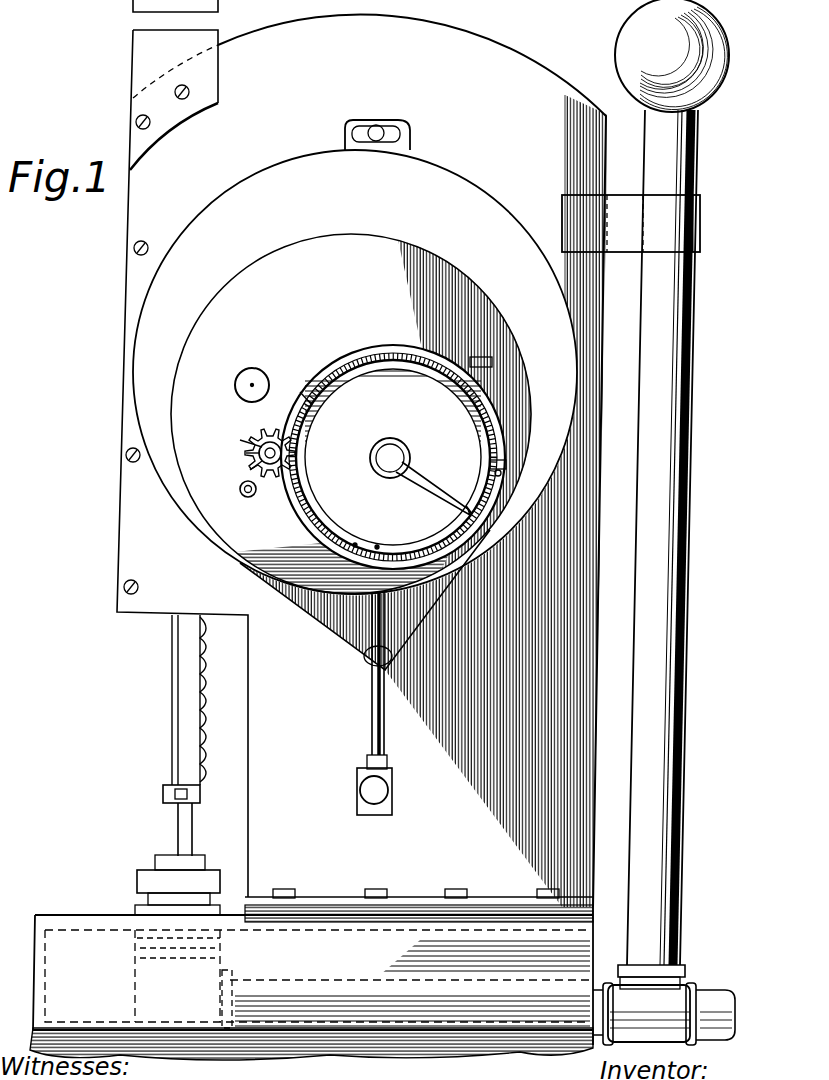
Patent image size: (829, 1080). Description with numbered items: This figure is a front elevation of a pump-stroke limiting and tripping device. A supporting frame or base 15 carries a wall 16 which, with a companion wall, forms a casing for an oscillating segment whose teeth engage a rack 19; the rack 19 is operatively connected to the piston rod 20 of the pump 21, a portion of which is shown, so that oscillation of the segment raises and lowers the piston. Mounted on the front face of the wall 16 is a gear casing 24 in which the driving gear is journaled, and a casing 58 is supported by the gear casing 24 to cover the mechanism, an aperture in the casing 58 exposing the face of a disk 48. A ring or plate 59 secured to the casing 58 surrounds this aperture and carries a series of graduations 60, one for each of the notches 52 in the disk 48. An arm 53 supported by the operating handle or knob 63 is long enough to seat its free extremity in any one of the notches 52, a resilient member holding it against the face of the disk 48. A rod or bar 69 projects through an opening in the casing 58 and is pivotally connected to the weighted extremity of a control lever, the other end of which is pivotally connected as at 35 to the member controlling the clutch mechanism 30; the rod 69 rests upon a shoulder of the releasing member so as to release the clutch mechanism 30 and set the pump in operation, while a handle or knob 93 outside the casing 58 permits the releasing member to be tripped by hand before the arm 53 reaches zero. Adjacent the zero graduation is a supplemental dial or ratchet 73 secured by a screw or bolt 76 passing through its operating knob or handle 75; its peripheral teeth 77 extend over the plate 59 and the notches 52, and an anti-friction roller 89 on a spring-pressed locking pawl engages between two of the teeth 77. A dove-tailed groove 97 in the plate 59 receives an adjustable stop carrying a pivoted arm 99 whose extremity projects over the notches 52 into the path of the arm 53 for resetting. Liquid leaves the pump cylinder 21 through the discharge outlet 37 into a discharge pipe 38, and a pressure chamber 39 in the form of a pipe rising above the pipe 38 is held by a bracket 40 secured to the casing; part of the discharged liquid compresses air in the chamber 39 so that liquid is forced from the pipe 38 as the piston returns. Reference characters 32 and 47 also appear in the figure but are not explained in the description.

The supporting frame or base 15 is at (60, 920).
The wall 16 is at (527, 80).
The rack 19 is at (183, 672).
The piston rod 20 is at (176, 831).
The pump 21 is at (135, 1004).
The casing 24 is at (470, 200).
The clutch mechanism 30 is at (380, 791).
The weight holder 32 is at (388, 770).
The pivotal connection 35 is at (506, 464).
The discharge outlet 37 is at (226, 999).
The discharge pipe 38 is at (598, 998).
The pressure chamber 39 is at (682, 738).
The bracket 40 is at (700, 238).
The stop 47 is at (476, 357).
The disk 48 is at (438, 513).
The notches 52 is at (376, 545).
The arm 53 is at (428, 488).
The casing 58 is at (402, 258).
The ring or plate 59 is at (342, 350).
The graduations 60 is at (404, 350).
The operating handle or knob 63 is at (397, 452).
The rod or bar 69 is at (384, 722).
The supplemental dial or ratchet 73 is at (242, 441).
The operating knob or handle 75 is at (262, 453).
The screw or bolt 76 is at (262, 460).
The peripheral teeth 77 is at (270, 440).
The anti-friction roller 89 is at (248, 498).
The handle or knob 93 is at (252, 368).
The groove 97 is at (312, 405).
The arm 99 is at (500, 476).